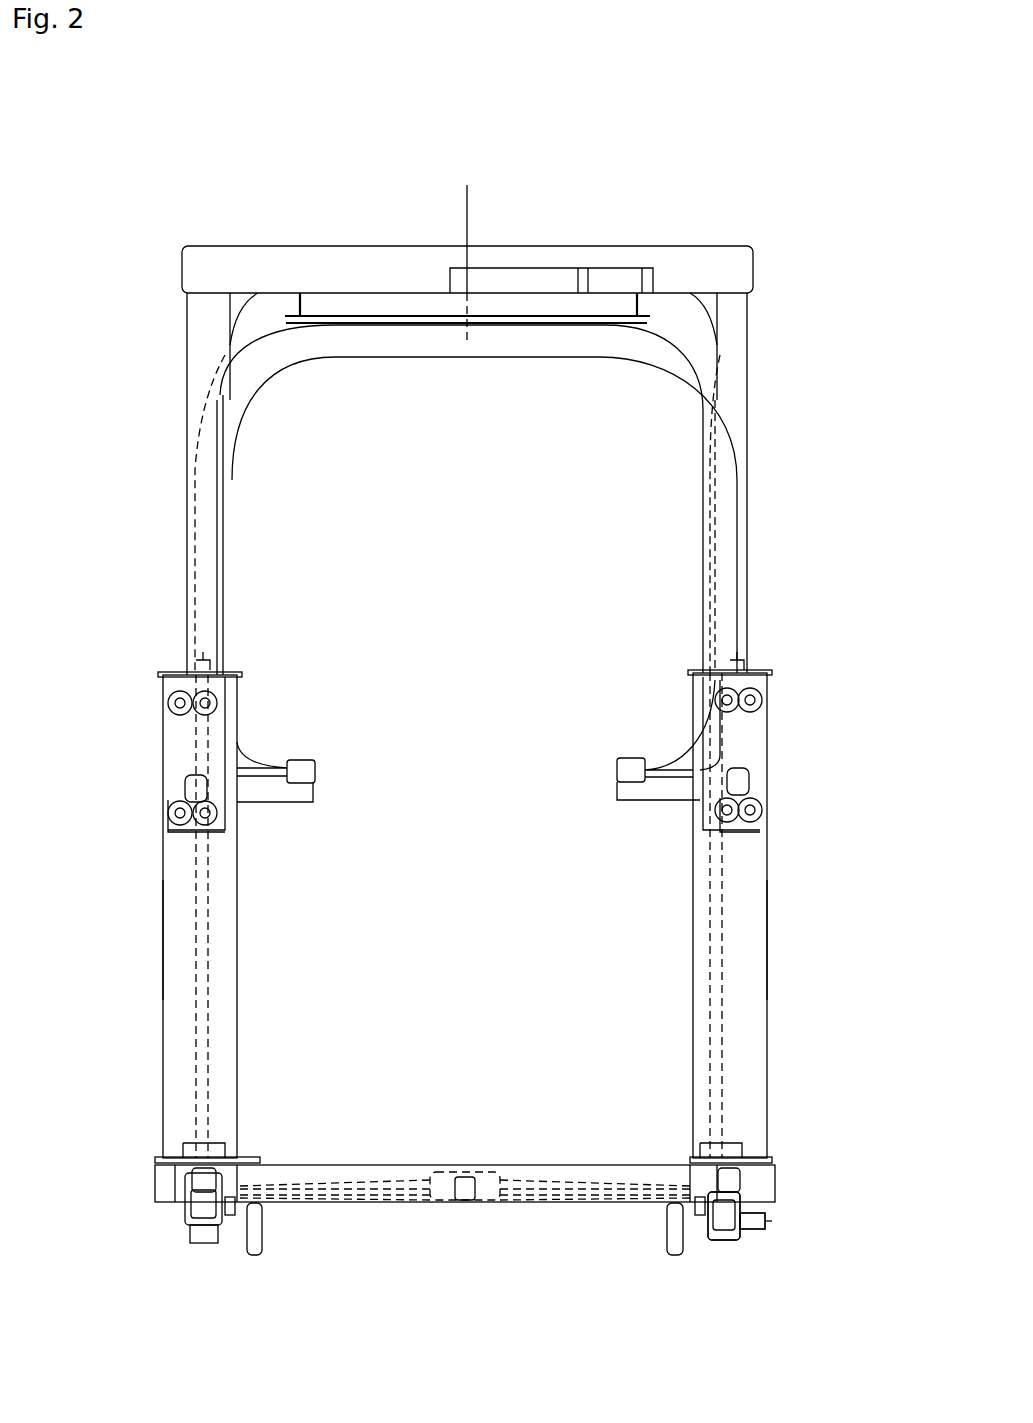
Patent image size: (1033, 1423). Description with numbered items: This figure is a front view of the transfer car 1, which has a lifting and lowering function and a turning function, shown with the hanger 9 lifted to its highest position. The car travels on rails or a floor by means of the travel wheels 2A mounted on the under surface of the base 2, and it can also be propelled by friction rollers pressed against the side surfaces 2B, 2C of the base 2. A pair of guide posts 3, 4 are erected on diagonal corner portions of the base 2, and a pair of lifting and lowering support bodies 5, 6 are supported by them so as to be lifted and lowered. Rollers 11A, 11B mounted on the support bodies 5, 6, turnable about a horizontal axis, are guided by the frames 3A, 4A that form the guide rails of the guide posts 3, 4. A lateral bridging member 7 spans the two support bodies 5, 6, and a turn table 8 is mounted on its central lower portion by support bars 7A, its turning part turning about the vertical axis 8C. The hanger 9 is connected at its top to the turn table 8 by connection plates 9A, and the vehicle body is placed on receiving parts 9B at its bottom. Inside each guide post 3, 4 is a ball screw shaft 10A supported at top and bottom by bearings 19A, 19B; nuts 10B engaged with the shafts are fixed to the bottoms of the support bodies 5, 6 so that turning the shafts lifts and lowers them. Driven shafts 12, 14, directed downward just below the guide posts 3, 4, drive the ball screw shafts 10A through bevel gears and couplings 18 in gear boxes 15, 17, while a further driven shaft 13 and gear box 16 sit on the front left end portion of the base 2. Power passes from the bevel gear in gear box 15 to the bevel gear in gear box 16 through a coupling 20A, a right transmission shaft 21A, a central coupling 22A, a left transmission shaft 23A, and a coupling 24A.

The transfer car 1 is at (670, 115).
The base 2 is at (578, 1155).
The travel wheels 2A is at (255, 1258).
The side surface of the base 2B is at (777, 1175).
The side surface of the base 2C is at (158, 1175).
The guide post 3 is at (276, 929).
The frame 3A is at (163, 922).
The guide post 4 is at (671, 908).
The frame 4A is at (767, 912).
The lifting and lowering support body 5 is at (187, 325).
The lifting and lowering support body 6 is at (745, 325).
The lateral bridging member 7 is at (534, 238).
The support bars 7A is at (620, 280).
The turn table 8 is at (390, 292).
The vertical axis 8C is at (468, 225).
The hanger 9 is at (544, 371).
The connection plates 9A is at (467, 340).
The receiving parts 9B is at (300, 757).
The ball screw shaft 10A is at (198, 982).
The nut 10B is at (200, 845).
The roller 11A is at (205, 717).
The roller 11B is at (190, 786).
The driven shaft 12 is at (205, 1245).
The driven shaft 13 is at (722, 1245).
The driven shaft 14 is at (752, 1221).
The gear box 15 is at (176, 1239).
The gear box 16 is at (744, 1252).
The gear box 17 is at (724, 1216).
The coupling 18 is at (190, 1195).
The top bearing 19A is at (175, 695).
The bottom bearing 19B is at (185, 1150).
The coupling 20A is at (230, 1218).
The right transmission shaft 21A is at (350, 1205).
The coupling 22A is at (467, 1217).
The left transmission shaft 23A is at (555, 1205).
The coupling 24A is at (700, 1218).